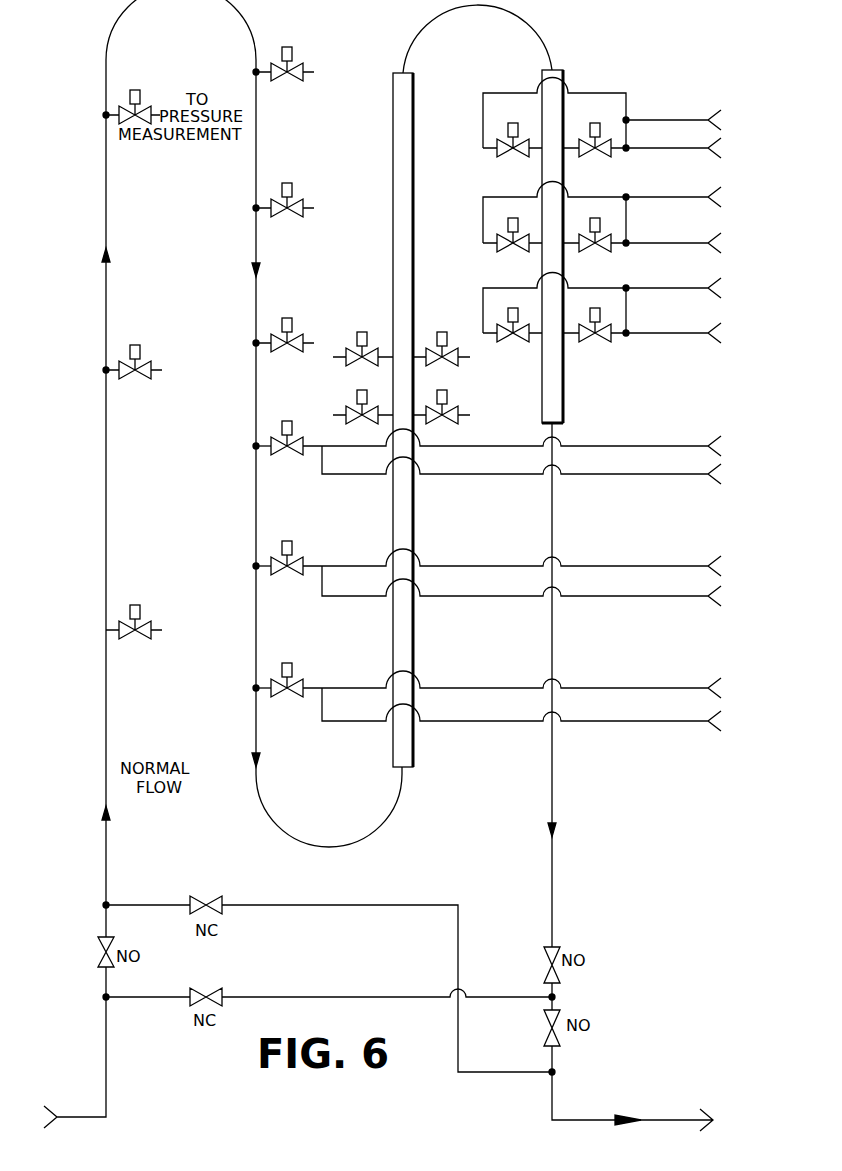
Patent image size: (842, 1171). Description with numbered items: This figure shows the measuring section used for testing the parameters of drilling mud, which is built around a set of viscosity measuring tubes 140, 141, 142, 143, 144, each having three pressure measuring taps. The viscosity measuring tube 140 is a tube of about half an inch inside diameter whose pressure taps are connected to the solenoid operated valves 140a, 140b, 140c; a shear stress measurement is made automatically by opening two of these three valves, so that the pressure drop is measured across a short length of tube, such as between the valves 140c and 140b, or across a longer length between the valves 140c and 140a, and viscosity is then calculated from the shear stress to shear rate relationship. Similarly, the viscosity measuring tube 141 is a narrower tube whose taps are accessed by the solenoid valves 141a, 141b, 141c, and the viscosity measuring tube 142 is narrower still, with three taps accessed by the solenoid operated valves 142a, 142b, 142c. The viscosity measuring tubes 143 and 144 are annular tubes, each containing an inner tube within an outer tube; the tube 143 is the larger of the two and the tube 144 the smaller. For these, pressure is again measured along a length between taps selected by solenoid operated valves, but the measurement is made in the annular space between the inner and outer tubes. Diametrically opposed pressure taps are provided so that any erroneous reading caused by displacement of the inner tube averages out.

The viscosity measuring tube 140 is at (106, 207).
The solenoid operated valve 140a is at (143, 108).
The solenoid operated valve 140b is at (136, 380).
The solenoid operated valve 140c is at (136, 640).
The viscosity measuring tube 141 is at (256, 165).
The solenoid valve 141a is at (293, 82).
The solenoid valve 141b is at (293, 218).
The solenoid valve 141c is at (294, 334).
The viscosity measuring tube 142 is at (256, 520).
The solenoid operated valve 142a is at (287, 457).
The solenoid operated valve 142b is at (287, 576).
The solenoid operated valve 142c is at (287, 698).
The annular viscosity measuring tube 143 is at (413, 515).
The annular viscosity measuring tube 144 is at (563, 383).